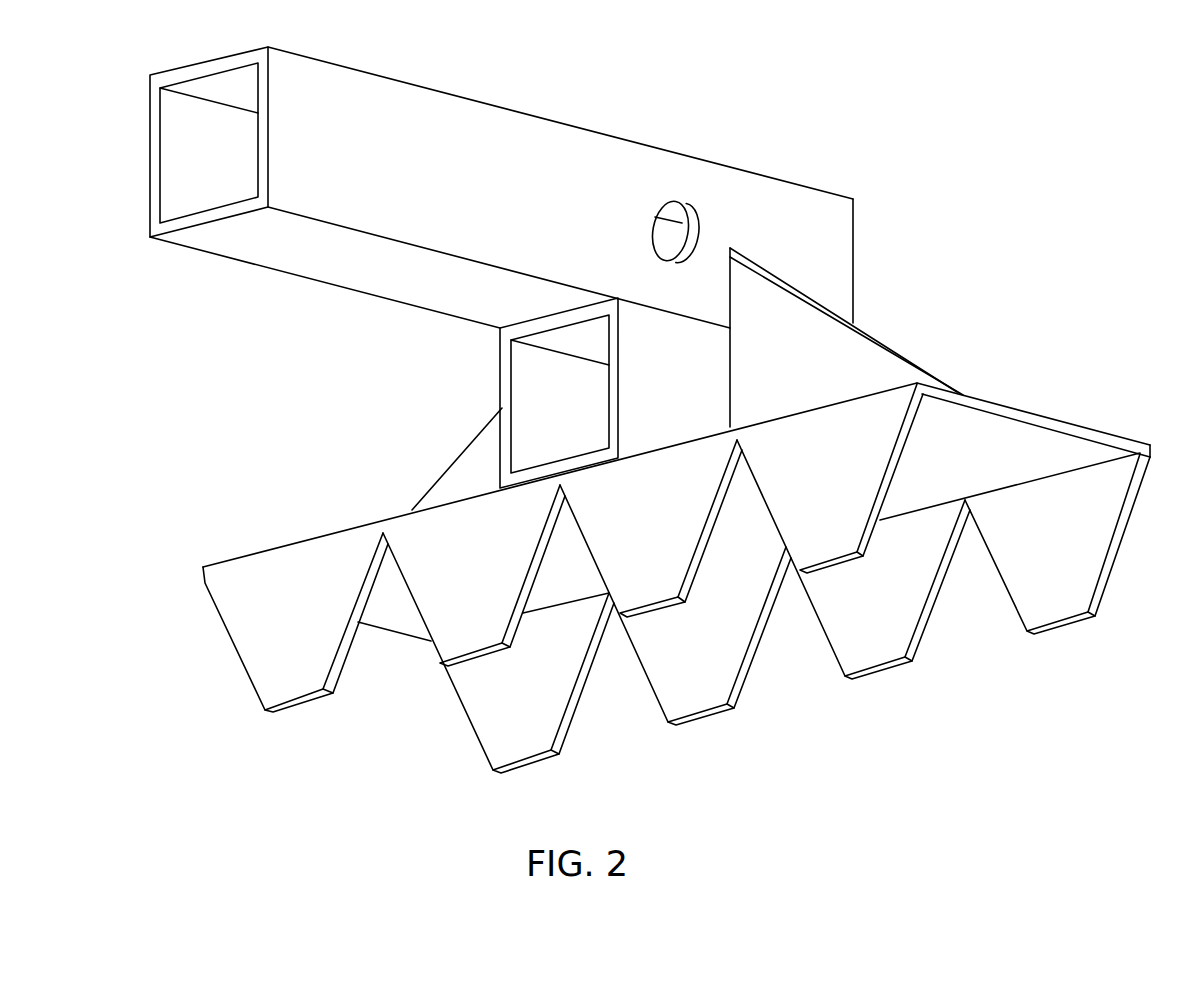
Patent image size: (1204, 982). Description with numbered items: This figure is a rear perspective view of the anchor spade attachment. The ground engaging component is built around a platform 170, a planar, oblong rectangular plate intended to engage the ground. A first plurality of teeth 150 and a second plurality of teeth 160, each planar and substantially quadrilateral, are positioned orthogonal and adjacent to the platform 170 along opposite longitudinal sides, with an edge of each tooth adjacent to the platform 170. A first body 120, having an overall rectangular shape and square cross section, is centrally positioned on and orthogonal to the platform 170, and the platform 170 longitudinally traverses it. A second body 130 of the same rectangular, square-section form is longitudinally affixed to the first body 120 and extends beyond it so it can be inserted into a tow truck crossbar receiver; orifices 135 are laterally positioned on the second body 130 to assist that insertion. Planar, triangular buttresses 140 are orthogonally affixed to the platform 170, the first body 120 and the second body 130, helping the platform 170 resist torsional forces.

The first body 120 is at (659, 390).
The second body 130 is at (436, 184).
The orifices 135 is at (653, 223).
The buttresses 140 is at (785, 367).
The first plurality of teeth 150 is at (1113, 556).
The second plurality of teeth 160 is at (228, 636).
The platform 170 is at (1076, 424).